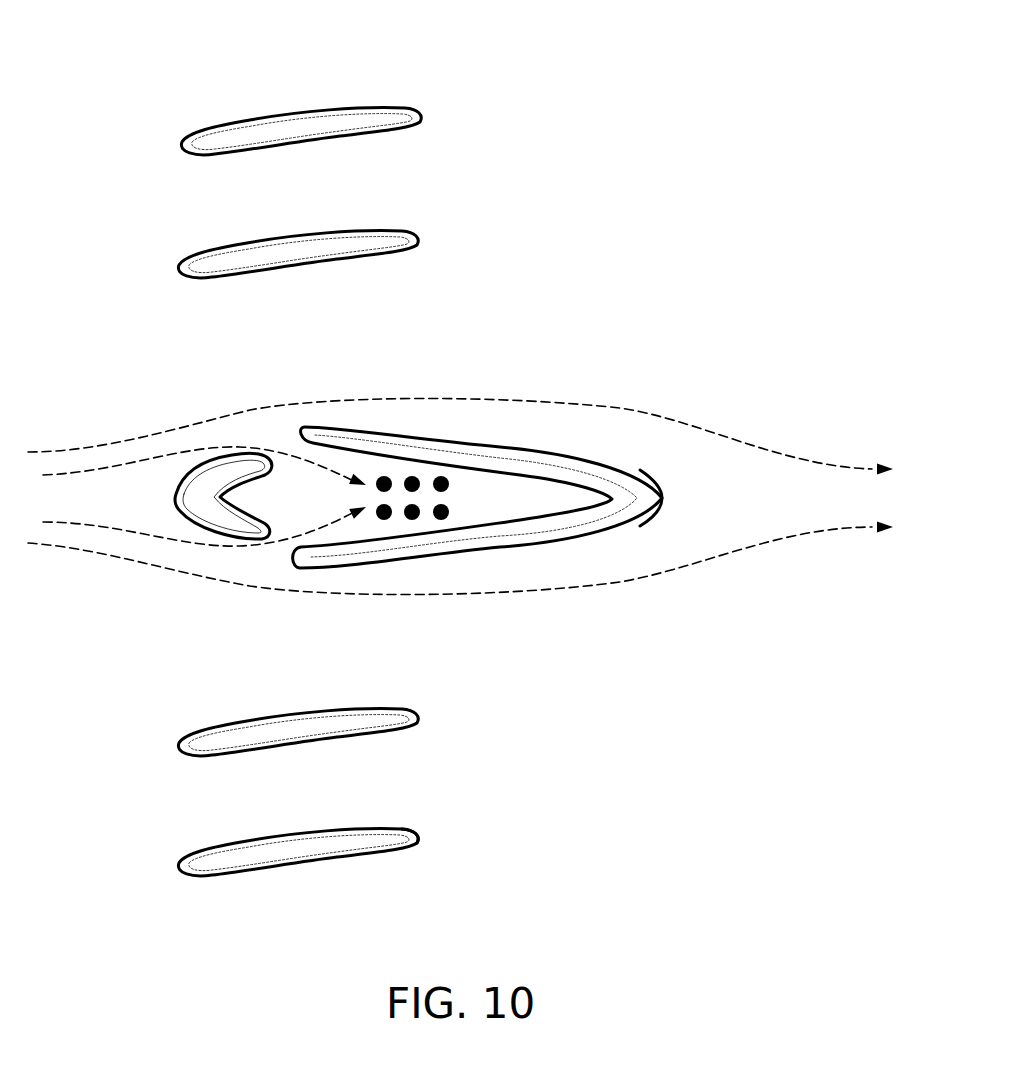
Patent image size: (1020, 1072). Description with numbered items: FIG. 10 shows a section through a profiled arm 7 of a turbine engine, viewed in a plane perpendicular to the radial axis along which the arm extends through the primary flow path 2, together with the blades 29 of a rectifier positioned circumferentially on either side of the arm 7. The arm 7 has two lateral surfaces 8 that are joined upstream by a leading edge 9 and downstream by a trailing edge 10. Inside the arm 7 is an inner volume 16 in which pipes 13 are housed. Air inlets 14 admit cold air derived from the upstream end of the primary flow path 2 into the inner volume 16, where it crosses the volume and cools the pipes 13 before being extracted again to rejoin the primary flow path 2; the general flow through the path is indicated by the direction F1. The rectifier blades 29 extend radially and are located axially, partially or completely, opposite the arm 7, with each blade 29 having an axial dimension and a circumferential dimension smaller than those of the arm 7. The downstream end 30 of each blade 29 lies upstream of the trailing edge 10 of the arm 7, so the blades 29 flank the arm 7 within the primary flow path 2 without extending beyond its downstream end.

The primary flow path 2 is at (770, 435).
The profiled arm 7 is at (566, 380).
The lateral surfaces 8 is at (501, 502).
The leading edge 9 is at (200, 503).
The trailing edge 10 is at (637, 500).
The pipes 13 is at (410, 476).
The air inlet 14 is at (272, 425).
The inner volume 16 is at (503, 500).
The rectifier blades 29 is at (238, 140).
The downstream end 30 is at (418, 836).
The flow direction F1 is at (788, 532).